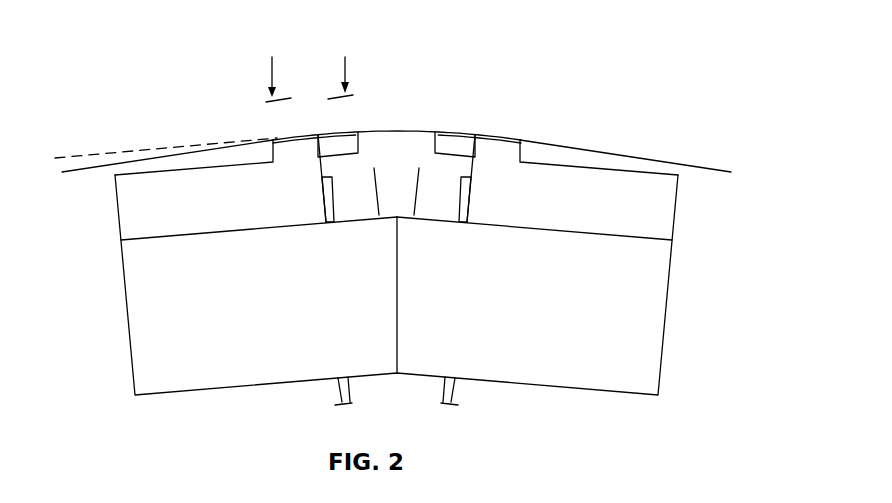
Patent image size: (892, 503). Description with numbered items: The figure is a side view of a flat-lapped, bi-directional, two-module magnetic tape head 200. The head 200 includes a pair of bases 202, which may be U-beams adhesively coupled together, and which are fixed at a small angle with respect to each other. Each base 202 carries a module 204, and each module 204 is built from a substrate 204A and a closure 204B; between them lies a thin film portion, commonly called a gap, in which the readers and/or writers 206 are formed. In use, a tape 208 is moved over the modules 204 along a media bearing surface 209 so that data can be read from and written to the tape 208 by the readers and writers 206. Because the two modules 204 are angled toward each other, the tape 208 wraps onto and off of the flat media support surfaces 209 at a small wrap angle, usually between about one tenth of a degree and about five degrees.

The two-module magnetic tape head 200 is at (160, 101).
The base 202 is at (125, 299).
The module 204 is at (118, 216).
The substrate 204A is at (170, 193).
The closure 204B is at (432, 148).
The readers and/or writers 206 is at (319, 127).
The tape 208 is at (600, 152).
The media bearing surface 209 is at (275, 131).